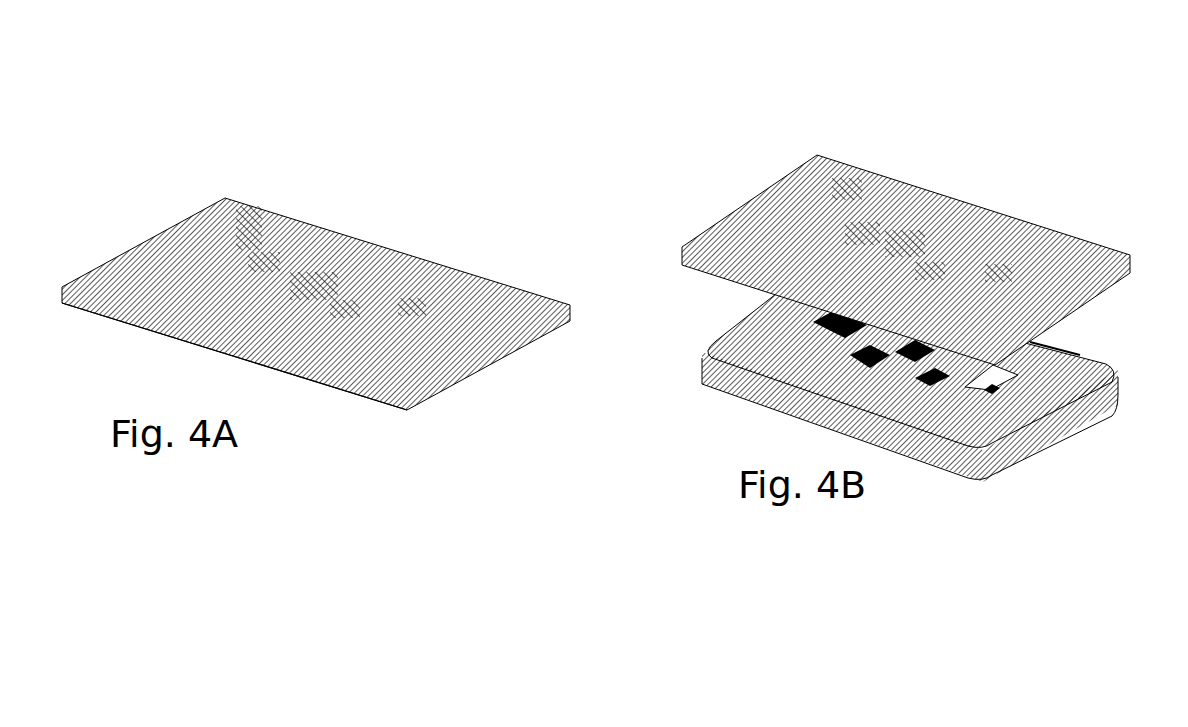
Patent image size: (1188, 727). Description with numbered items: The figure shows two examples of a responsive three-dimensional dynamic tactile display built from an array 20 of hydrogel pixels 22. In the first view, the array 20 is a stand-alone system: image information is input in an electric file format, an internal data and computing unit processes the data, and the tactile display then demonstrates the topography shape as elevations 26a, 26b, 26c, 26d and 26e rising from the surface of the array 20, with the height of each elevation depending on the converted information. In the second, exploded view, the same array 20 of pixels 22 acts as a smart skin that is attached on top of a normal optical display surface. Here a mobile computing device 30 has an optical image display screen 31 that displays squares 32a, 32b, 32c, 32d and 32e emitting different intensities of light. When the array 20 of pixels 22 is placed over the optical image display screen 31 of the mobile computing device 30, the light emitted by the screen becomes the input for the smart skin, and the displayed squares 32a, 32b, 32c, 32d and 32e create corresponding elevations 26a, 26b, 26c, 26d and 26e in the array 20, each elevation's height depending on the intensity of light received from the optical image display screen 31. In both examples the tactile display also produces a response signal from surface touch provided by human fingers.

In FIG. 4A, the array 20 is at (503, 330).
In FIG. 4B, the array 20 is at (783, 173).
In FIG. 4A, the pixels 22 is at (442, 387).
In FIG. 4A, the elevation 26a is at (245, 210).
In FIG. 4B, the elevation 26a is at (840, 177).
In FIG. 4A, the elevation 26b is at (253, 260).
In FIG. 4B, the elevation 26b is at (852, 220).
In FIG. 4A, the elevation 26c is at (327, 275).
In FIG. 4B, the elevation 26c is at (917, 228).
In FIG. 4A, the elevation 26d is at (343, 312).
In FIG. 4B, the elevation 26d is at (925, 260).
In FIG. 4A, the elevation 26e is at (410, 308).
In FIG. 4B, the elevation 26e is at (995, 262).
In FIG. 4B, the mobile computing device 30 is at (1012, 465).
In FIG. 4B, the optical image display screen 31 is at (1060, 347).
In FIG. 4B, the square 32a is at (815, 333).
In FIG. 4B, the square 32b is at (855, 366).
In FIG. 4B, the square 32c is at (895, 355).
In FIG. 4B, the square 32d is at (928, 385).
In FIG. 4B, the square 32e is at (992, 383).